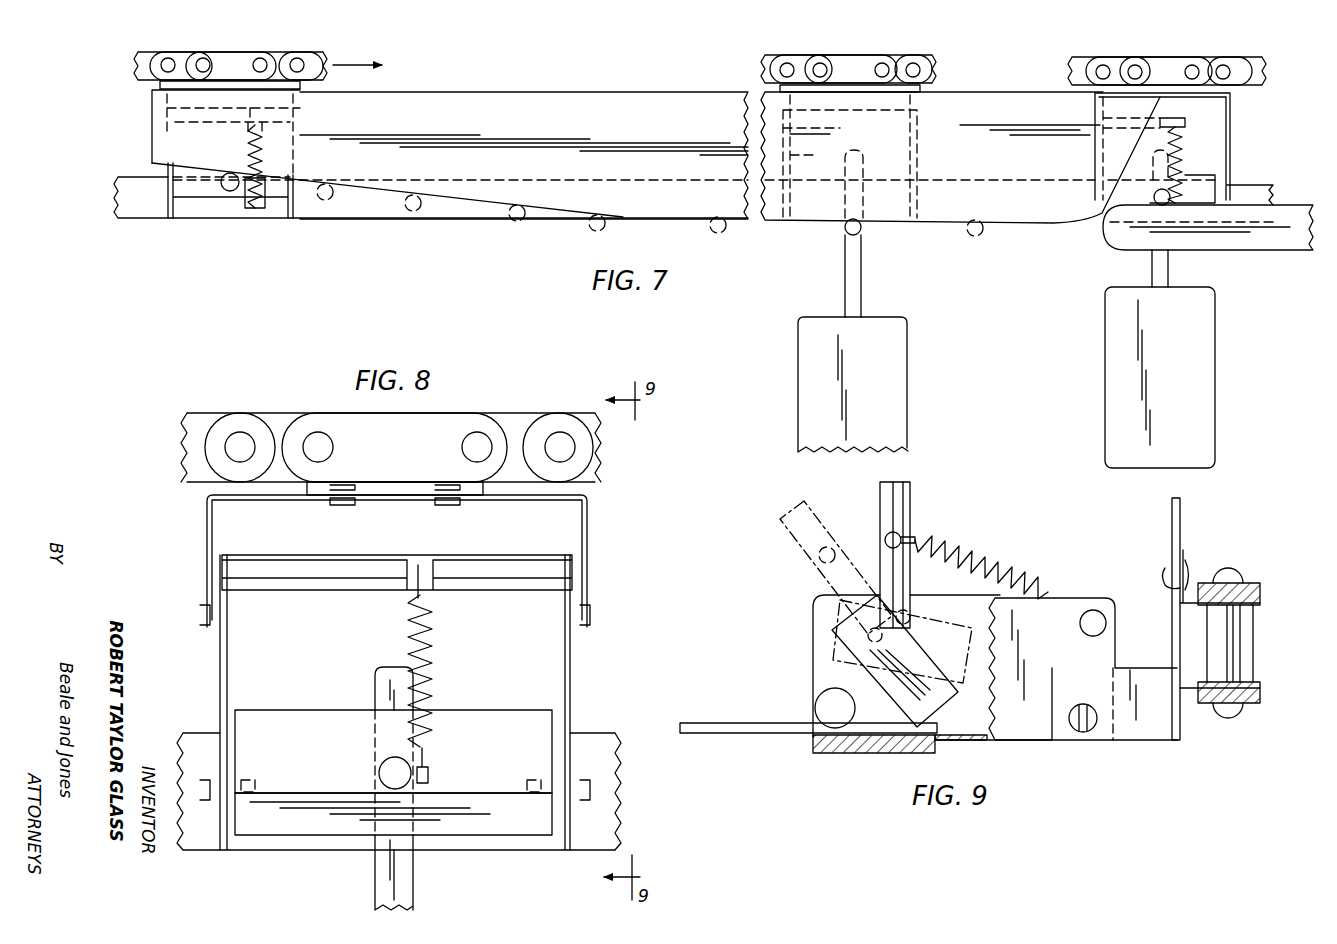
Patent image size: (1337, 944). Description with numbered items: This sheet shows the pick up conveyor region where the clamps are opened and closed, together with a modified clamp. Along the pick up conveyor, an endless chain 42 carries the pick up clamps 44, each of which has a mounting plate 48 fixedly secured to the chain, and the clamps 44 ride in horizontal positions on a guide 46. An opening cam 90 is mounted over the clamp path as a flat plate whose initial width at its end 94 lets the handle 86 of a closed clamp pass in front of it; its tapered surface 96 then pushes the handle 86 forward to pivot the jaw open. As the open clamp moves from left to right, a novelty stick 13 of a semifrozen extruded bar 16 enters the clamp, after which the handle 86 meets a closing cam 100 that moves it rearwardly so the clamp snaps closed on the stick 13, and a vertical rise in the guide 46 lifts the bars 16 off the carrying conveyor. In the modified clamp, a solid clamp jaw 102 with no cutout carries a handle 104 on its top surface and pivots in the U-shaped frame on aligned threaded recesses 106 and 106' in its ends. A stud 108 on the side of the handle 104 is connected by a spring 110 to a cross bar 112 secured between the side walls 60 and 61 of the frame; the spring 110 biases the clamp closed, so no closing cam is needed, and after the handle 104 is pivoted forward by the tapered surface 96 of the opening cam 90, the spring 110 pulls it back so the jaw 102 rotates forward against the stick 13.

In FIG. 7, the novelty stick 13 is at (845, 283).
In FIG. 8, the novelty stick 13 is at (393, 876).
In FIG. 9, the novelty stick 13 is at (745, 727).
In FIG. 7, the semifrozen extruded bar 16 is at (892, 355).
In FIG. 7, the endless chain 42 is at (138, 62).
In FIG. 8, the endless chain 42 is at (240, 428).
In FIG. 9, the endless chain 42 is at (1245, 591).
In FIG. 7, the pick up clamp 44 is at (181, 220).
In FIG. 7, the guide 46 is at (118, 190).
In FIG. 8, the guide 46 is at (598, 790).
In FIG. 9, the guide 46 is at (853, 750).
In FIG. 8, the mounting plate 48 is at (589, 538).
In FIG. 9, the mounting plate 48 is at (1182, 531).
In FIG. 8, the side wall 60 is at (571, 681).
In FIG. 8, the side wall 61 is at (220, 682).
In FIG. 7, the handle 86 is at (236, 190).
In FIG. 7, the opening cam 90 is at (548, 118).
In FIG. 7, the end 94 is at (152, 126).
In FIG. 7, the tapered surface 96 is at (473, 202).
In FIG. 7, the closing cam 100 is at (1266, 238).
In FIG. 8, the solid clamp jaw 102 is at (318, 728).
In FIG. 9, the solid clamp jaw 102 is at (843, 648).
In FIG. 8, the handle 104 is at (390, 771).
In FIG. 9, the handle 104 is at (898, 508).
In FIG. 8, the threaded recess 106 is at (524, 770).
In FIG. 8, the threaded recess 106' is at (270, 769).
In FIG. 8, the stud 108 is at (430, 778).
In FIG. 9, the stud 108 is at (886, 537).
In FIG. 8, the spring 110 is at (408, 650).
In FIG. 9, the spring 110 is at (1020, 582).
In FIG. 8, the cross bar 112 is at (316, 572).
In FIG. 9, the cross bar 112 is at (1096, 624).